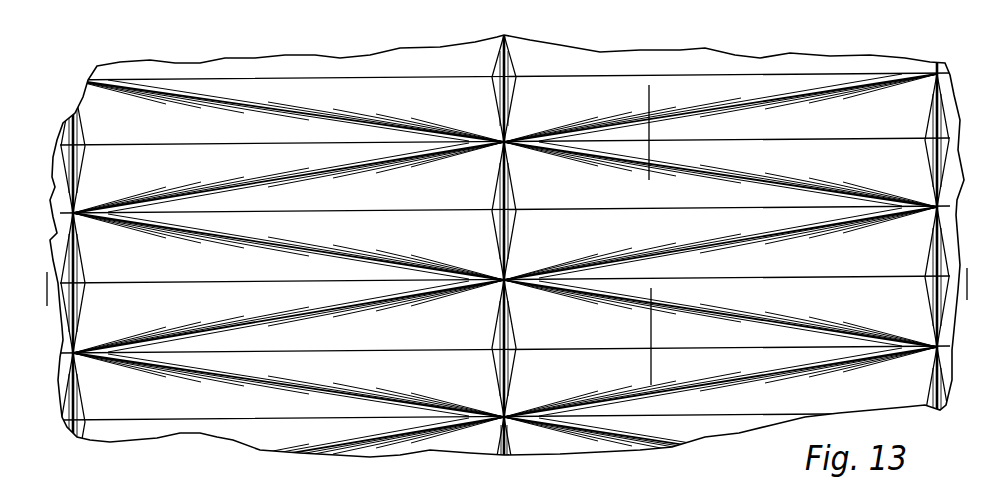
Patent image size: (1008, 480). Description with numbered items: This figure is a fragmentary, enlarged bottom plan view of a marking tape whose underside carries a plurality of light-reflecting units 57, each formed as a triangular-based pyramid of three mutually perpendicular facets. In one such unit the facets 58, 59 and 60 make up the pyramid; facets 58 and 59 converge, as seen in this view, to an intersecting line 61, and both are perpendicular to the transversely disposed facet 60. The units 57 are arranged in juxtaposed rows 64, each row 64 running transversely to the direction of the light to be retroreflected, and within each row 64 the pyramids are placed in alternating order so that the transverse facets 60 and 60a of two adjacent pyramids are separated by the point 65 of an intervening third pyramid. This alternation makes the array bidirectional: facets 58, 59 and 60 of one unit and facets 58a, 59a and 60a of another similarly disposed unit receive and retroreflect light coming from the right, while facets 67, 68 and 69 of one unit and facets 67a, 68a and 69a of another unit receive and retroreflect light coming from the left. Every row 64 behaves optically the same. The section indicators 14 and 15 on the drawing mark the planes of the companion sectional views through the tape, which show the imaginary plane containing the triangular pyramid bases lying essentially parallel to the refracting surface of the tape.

The light-reflecting unit 57 is at (113, 110).
The row 64 is at (343, 97).
The facet 67 is at (829, 107).
The facet 58 is at (674, 178).
The facet 59 is at (668, 236).
The facet 58a is at (684, 322).
The facet 59a is at (687, 373).
The point 65 is at (499, 276).
The facet 60 is at (514, 204).
The facet 60a is at (514, 354).
The intersecting line 61 is at (608, 208).
The facet 68 is at (815, 158).
The facet 67a is at (815, 268).
The facet 68a is at (812, 295).
The facet 69 is at (929, 145).
The facet 69a is at (930, 288).
The section line 15- 15 is at (648, 97).
The section line 14- 14 is at (47, 313).